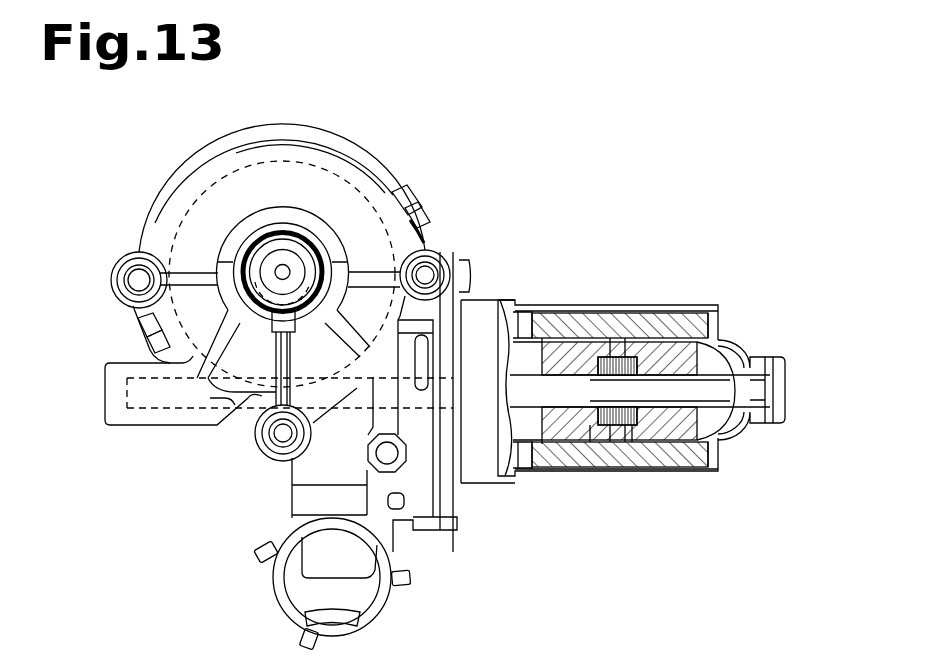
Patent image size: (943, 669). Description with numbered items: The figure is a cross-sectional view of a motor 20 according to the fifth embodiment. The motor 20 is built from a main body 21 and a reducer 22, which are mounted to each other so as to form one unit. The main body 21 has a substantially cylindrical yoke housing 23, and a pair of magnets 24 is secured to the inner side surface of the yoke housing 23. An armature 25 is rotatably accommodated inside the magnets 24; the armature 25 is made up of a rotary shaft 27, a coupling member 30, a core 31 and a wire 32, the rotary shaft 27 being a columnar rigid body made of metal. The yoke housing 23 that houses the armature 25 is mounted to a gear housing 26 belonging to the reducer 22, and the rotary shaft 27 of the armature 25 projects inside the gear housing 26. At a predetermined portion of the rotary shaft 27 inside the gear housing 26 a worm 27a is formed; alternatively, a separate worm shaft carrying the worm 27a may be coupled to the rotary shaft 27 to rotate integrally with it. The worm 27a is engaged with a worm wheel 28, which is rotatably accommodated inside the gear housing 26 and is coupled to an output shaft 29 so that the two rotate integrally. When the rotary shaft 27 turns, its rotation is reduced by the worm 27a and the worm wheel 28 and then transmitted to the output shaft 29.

The motor 20 is at (718, 184).
The main body 21 is at (700, 305).
The reducer 22 is at (395, 188).
The yoke housing 23 is at (680, 465).
The magnets 24 is at (568, 318).
The armature 25 is at (650, 318).
The gear housing 26 is at (432, 250).
The rotary shaft 27 is at (725, 375).
The worm 27a is at (247, 400).
The worm wheel 28 is at (182, 182).
The output shaft 29 is at (283, 255).
The coupling member 30 is at (605, 350).
The core 31 is at (632, 440).
The wire 32 is at (735, 432).